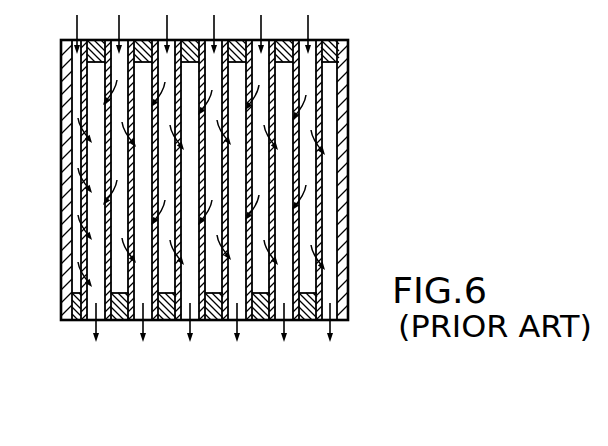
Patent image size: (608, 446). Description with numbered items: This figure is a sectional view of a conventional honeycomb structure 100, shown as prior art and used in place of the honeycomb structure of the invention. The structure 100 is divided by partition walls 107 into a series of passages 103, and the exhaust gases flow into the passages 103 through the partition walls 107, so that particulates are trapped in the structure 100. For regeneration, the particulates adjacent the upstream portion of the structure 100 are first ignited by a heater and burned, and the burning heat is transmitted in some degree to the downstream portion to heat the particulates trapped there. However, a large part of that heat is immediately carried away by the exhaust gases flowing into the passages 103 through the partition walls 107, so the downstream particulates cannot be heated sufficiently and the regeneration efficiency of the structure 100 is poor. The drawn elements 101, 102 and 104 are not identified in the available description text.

The conventional honeycomb structure 100 is at (241, 192).
The inlet passage 101 is at (303, 166).
The bottom plug 102 is at (307, 322).
The passages 103 is at (291, 98).
The top plug 104 is at (343, 52).
The partition walls 107 is at (295, 138).